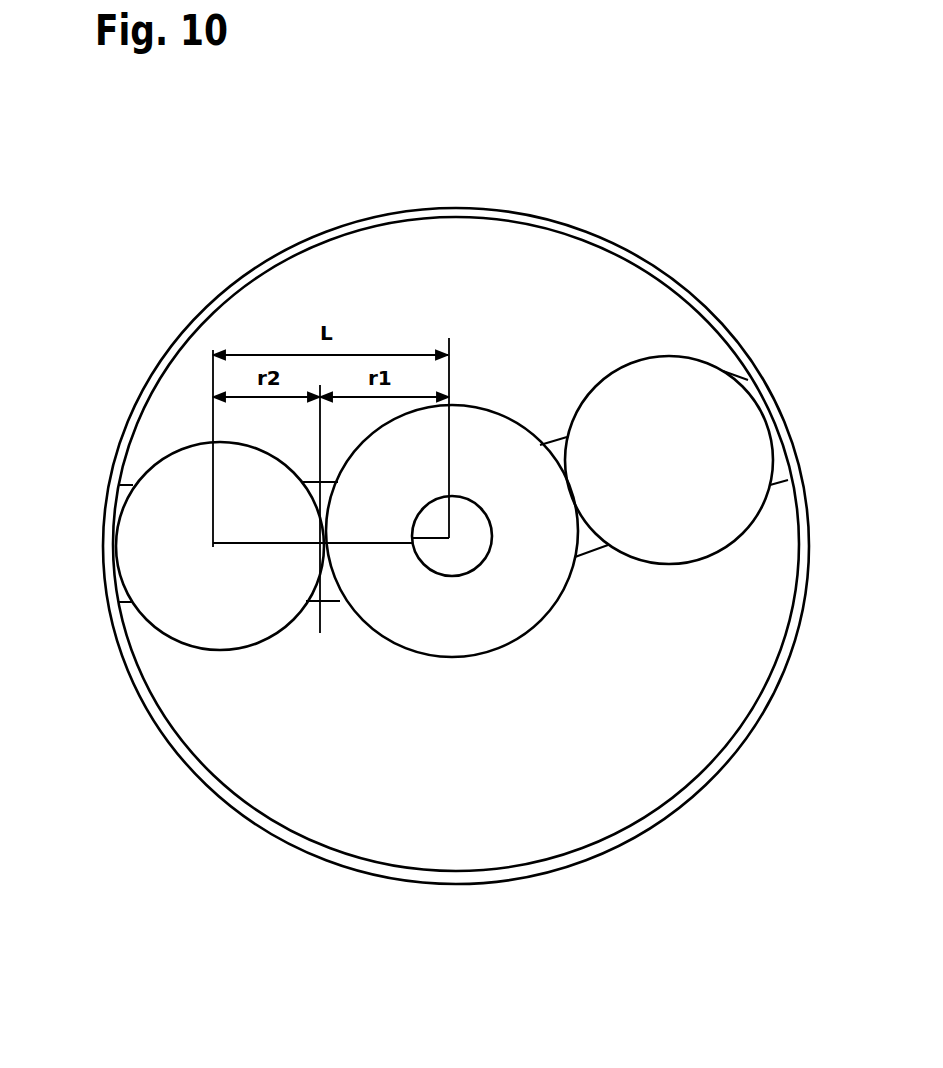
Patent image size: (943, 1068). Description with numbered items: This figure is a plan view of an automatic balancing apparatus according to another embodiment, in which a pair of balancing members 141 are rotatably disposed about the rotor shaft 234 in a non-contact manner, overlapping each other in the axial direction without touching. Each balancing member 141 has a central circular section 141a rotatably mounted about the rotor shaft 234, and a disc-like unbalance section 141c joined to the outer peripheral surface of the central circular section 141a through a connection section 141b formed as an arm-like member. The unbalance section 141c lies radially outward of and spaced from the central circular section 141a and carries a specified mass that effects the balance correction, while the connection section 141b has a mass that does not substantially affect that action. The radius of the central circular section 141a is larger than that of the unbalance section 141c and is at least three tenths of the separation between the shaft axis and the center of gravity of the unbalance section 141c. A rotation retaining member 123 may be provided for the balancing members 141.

The rotation retaining member 123 is at (406, 215).
The balancing member 141 is at (590, 335).
The central circular section 141a is at (163, 620).
The connection section 141b is at (558, 437).
The unbalance section 141c is at (727, 510).
The rotor shaft 234 is at (467, 557).